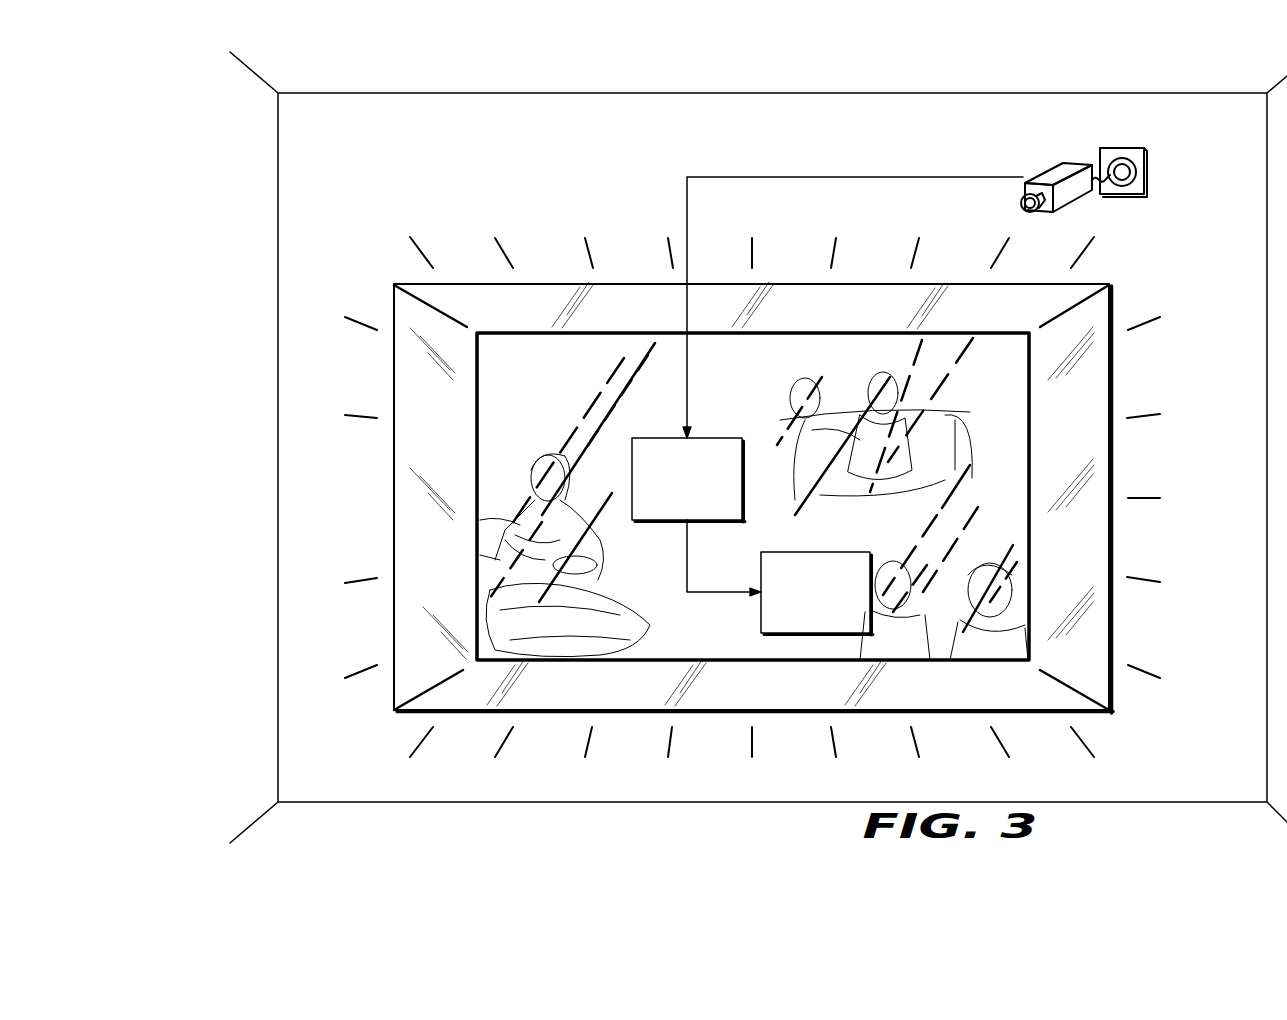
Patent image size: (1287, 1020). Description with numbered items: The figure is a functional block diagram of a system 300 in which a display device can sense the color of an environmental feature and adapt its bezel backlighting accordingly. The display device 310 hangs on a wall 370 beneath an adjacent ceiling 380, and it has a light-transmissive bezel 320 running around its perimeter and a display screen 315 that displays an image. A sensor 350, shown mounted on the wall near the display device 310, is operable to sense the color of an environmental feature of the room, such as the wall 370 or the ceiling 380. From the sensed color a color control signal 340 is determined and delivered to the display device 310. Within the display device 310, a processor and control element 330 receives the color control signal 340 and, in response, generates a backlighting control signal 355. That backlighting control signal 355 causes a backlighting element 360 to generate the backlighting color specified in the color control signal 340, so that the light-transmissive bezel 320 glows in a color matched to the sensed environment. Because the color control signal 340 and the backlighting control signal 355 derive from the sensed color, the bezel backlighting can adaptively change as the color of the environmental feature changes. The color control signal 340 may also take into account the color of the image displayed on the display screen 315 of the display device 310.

The system 300 is at (1165, 833).
The display device 310 is at (733, 692).
The display screen 315 is at (545, 352).
The light-transmissive bezel 320 is at (1023, 703).
The processor and control element 330 is at (664, 437).
The color control signal 340 is at (866, 177).
The sensor 350 is at (1073, 160).
The backlighting control signal 355 is at (704, 609).
The backlighting element 360 is at (815, 552).
The wall 370 is at (317, 178).
The ceiling 380 is at (675, 67).